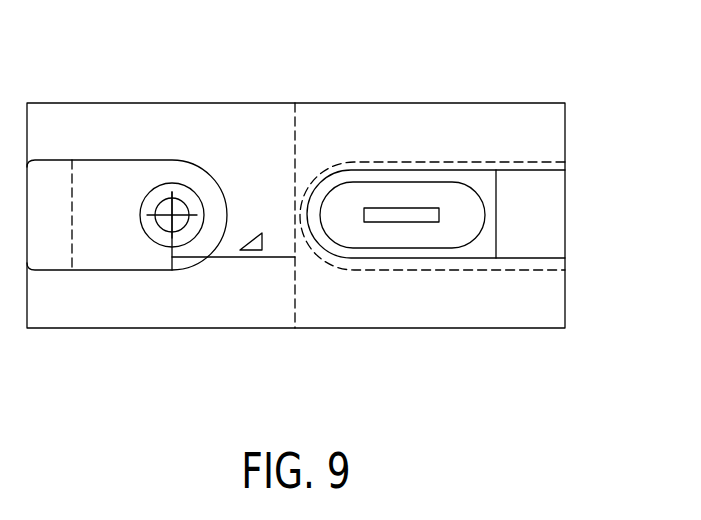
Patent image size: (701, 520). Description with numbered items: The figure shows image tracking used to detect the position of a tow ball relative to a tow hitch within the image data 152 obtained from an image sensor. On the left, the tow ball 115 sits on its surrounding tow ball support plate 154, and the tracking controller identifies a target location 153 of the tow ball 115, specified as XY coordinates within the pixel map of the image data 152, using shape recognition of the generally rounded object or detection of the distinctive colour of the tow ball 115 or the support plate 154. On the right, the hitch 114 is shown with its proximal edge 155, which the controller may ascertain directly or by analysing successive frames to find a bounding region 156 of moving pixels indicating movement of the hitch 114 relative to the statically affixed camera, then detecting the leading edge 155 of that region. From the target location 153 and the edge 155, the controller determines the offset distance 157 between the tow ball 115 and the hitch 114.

The hitch 114 is at (408, 182).
The tow ball 115 is at (172, 190).
The image data 152 is at (532, 115).
The target location 153 is at (190, 203).
The tow ball support plate 154 is at (128, 160).
The proximal edge 155 is at (297, 132).
The bounding region 156 is at (467, 271).
The offset distance 157 is at (272, 258).